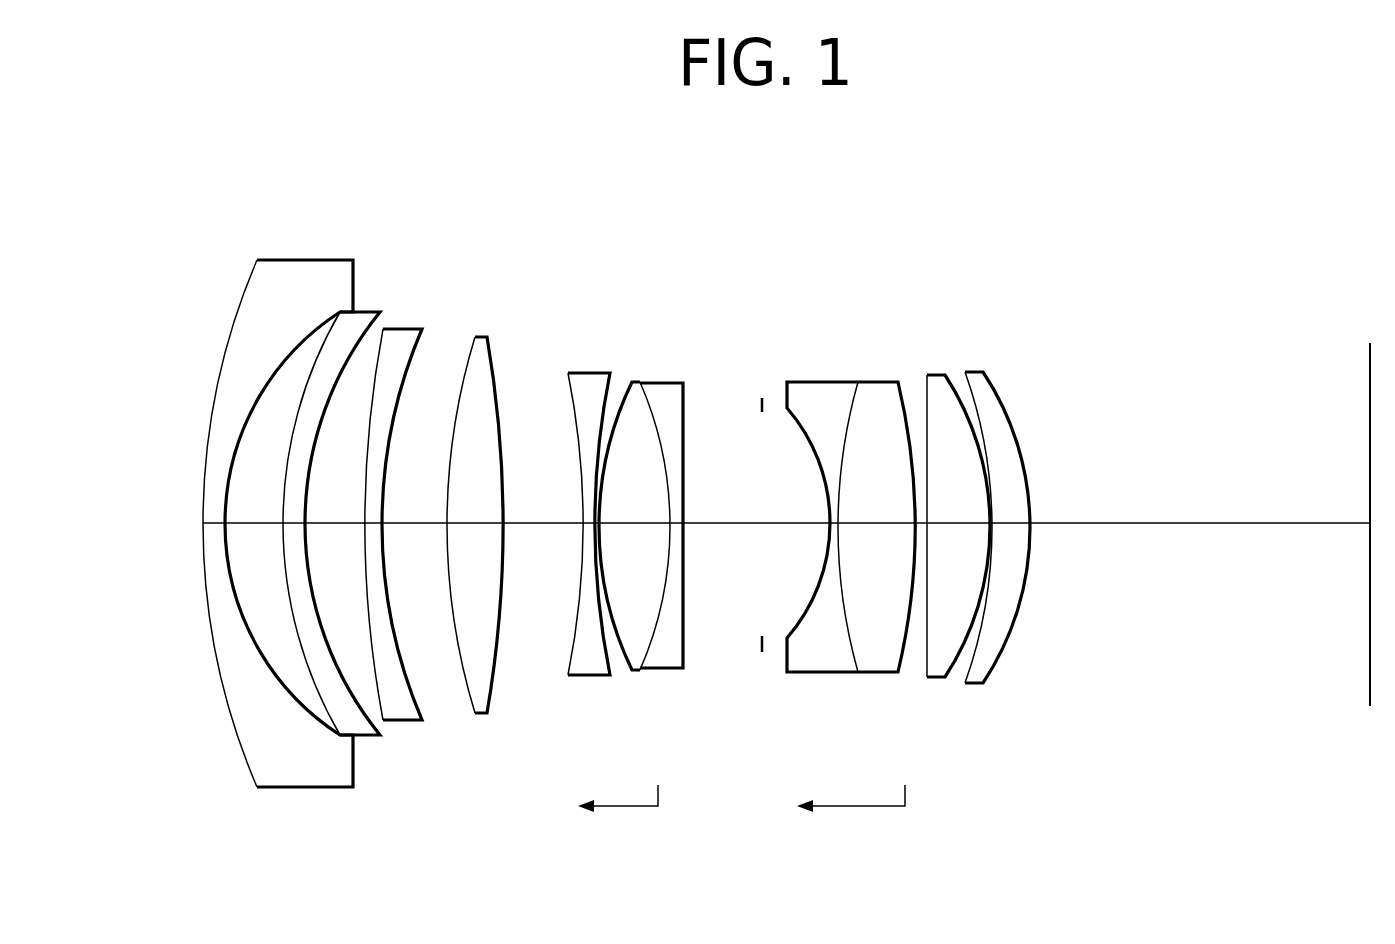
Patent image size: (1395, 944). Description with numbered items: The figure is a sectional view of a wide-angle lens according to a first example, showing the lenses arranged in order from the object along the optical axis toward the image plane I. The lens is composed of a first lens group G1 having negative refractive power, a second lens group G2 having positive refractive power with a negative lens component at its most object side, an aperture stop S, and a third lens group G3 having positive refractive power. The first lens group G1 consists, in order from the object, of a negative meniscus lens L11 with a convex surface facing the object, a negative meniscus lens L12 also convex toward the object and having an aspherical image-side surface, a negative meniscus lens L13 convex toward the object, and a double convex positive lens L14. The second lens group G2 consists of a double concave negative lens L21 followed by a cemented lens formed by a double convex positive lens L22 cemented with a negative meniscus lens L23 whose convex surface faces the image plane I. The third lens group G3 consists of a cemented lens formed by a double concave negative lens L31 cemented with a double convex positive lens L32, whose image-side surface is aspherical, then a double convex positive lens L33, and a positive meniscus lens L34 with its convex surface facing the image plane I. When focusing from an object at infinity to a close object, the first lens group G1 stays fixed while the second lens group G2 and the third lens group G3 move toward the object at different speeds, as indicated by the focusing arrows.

The negative meniscus lens L11 is at (303, 262).
The negative meniscus lens L12 is at (373, 312).
The negative meniscus lens L13 is at (418, 329).
The double convex positive lens L14 is at (487, 337).
The double concave negative lens L21 is at (583, 373).
The double convex positive lens L22 is at (637, 382).
The negative meniscus lens L23 is at (658, 383).
The double concave negative lens L31 is at (808, 382).
The double convex positive lens L32 is at (877, 382).
The double convex positive lens L33 is at (942, 375).
The positive meniscus lens L34 is at (973, 372).
The aperture stop S is at (762, 398).
The image plane I is at (1370, 343).
The first lens group G1 is at (361, 521).
The second lens group G2 is at (621, 531).
The third lens group G3 is at (905, 550).